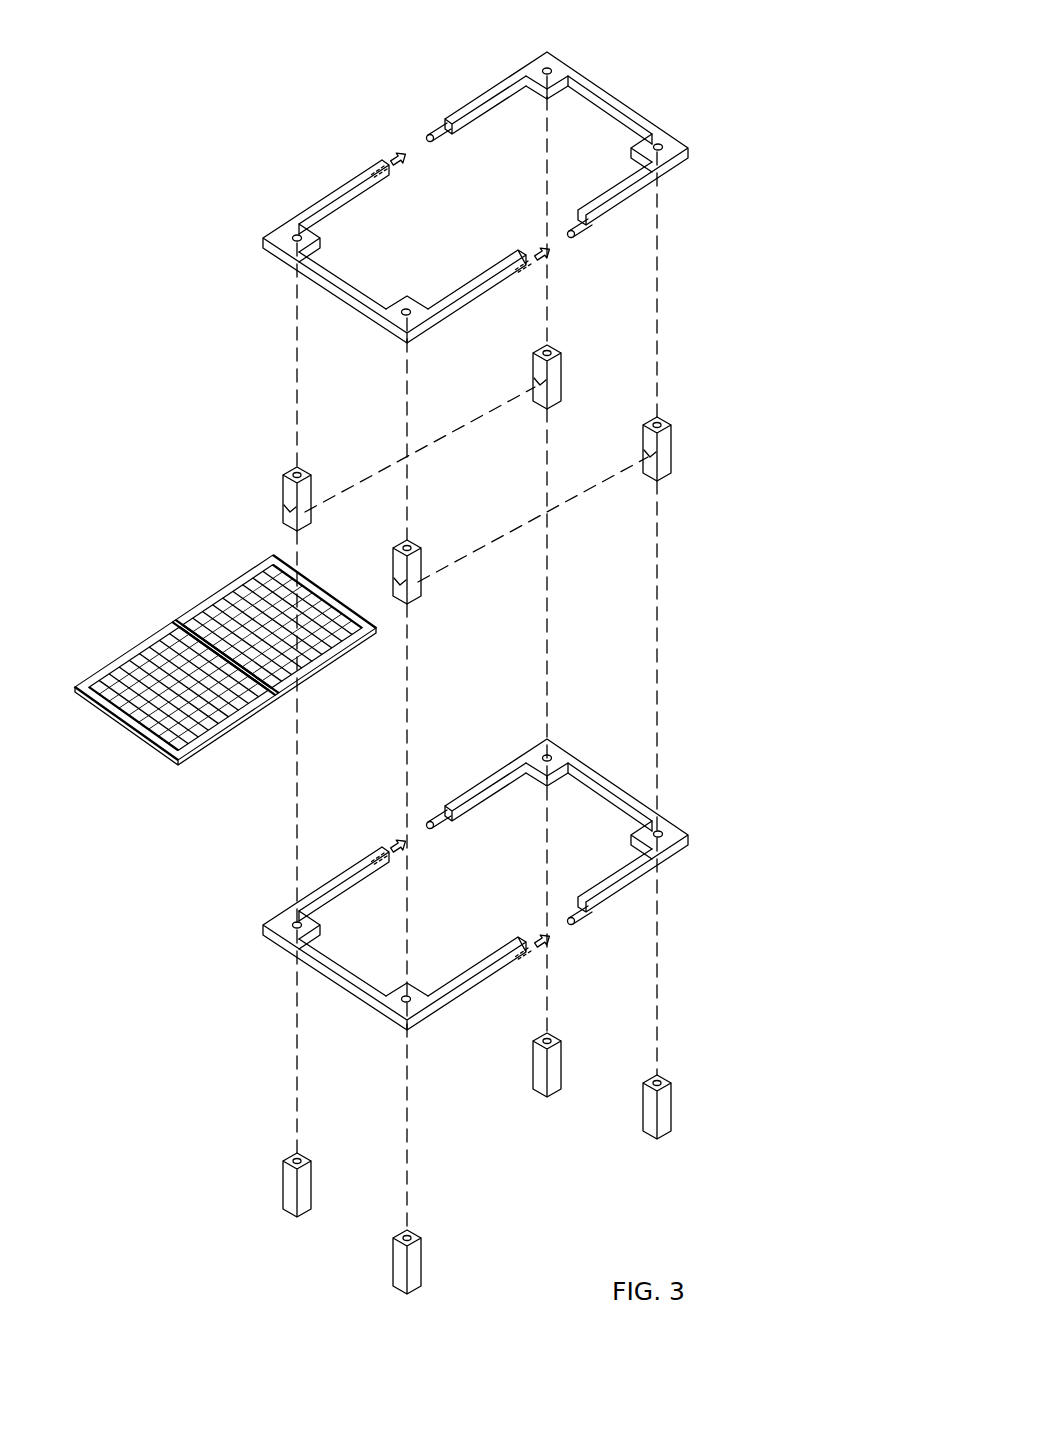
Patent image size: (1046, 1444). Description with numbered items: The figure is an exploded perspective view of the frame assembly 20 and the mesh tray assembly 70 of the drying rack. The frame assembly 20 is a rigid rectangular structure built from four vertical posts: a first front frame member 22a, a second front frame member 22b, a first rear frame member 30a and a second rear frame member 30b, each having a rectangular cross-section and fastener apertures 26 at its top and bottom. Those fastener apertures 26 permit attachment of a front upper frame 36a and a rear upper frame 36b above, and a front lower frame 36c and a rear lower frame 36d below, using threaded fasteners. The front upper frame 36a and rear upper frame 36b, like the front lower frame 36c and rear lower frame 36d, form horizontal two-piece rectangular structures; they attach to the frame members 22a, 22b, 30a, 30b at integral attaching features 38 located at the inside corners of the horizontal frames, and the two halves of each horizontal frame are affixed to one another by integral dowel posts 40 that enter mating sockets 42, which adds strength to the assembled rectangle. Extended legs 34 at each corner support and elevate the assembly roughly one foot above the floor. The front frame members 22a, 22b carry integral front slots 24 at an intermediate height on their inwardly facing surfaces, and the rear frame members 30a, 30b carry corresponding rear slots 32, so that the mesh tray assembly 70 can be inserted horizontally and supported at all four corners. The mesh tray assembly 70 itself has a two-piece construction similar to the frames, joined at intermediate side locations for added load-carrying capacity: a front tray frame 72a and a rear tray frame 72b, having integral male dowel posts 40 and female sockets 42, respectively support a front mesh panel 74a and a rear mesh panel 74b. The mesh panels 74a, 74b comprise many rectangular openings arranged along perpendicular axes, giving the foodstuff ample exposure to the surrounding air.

The frame assembly 20 is at (306, 61).
The first front frame member 22a is at (289, 486).
The second front frame member 22b is at (422, 591).
The front slot 24 is at (311, 510).
The fastener aperture 26 is at (555, 69).
The first rear frame member 30a is at (561, 358).
The second rear frame member 30b is at (672, 432).
The rear slot 32 is at (557, 387).
The leg 34 is at (650, 1098).
The front upper frame 36a is at (340, 184).
The rear upper frame 36b is at (495, 84).
The front lower frame 36c is at (340, 871).
The rear lower frame 36d is at (495, 771).
The attaching feature 38 is at (404, 297).
The dowel post 40 is at (435, 122).
The socket 42 is at (378, 160).
The mesh tray assembly 70 is at (166, 607).
The front tray frame 72a is at (177, 690).
The rear tray frame 72b is at (274, 625).
The front mesh panel 74a is at (178, 688).
The rear mesh panel 74b is at (272, 626).